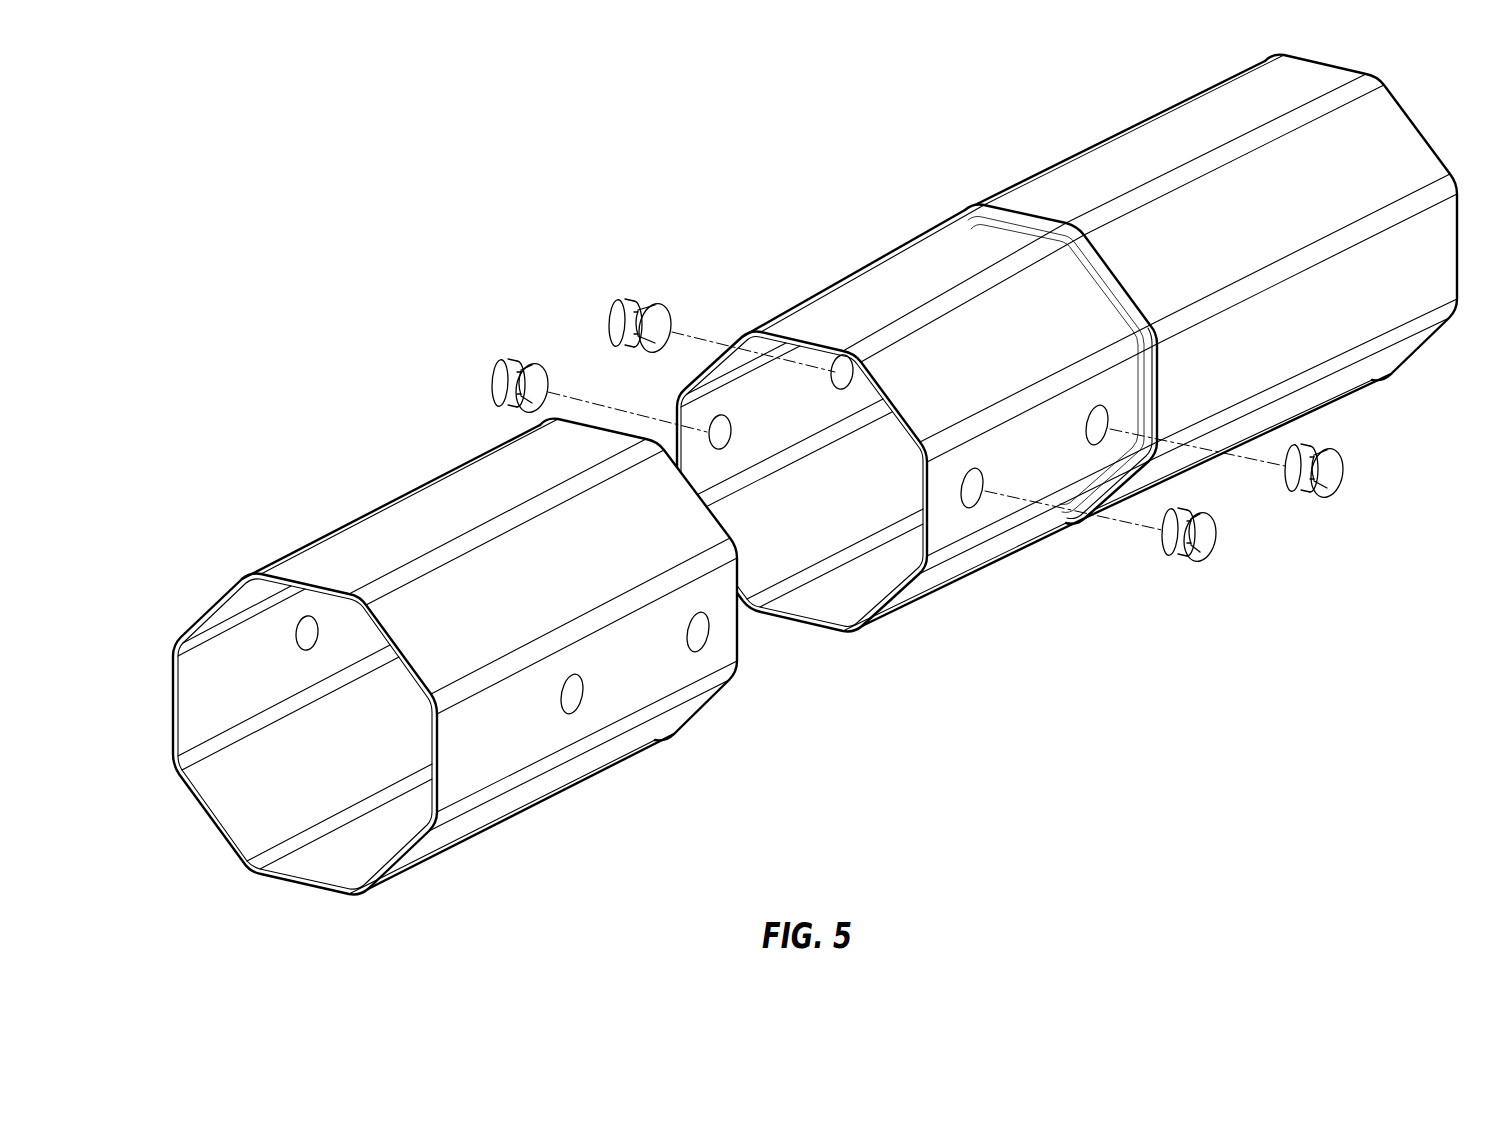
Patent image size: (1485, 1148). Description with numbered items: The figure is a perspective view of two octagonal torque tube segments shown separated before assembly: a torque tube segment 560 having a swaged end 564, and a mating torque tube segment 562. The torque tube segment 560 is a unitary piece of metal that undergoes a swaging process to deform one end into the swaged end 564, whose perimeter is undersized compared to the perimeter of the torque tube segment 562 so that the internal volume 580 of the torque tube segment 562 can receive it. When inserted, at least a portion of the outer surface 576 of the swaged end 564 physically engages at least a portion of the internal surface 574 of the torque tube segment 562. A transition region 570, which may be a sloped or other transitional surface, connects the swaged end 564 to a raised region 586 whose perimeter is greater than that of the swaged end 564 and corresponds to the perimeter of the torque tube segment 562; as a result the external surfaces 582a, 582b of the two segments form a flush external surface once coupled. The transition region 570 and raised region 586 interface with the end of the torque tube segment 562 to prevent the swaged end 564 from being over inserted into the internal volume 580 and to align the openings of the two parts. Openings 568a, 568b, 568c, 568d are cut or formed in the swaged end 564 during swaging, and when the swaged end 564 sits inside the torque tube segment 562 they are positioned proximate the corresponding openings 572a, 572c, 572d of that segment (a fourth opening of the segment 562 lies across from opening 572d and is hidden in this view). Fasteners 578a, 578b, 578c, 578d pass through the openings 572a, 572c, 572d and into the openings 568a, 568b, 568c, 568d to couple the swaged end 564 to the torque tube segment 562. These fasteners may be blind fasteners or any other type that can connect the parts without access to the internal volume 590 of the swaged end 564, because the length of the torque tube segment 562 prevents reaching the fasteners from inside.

The torque tube segment 560 is at (1072, 344).
The torque tube segment 562 is at (450, 663).
The swaged end 564 is at (916, 414).
The opening 568a is at (708, 430).
The opening 568b is at (838, 362).
The opening 568c is at (982, 495).
The opening 568d is at (1107, 432).
The transition region 570 is at (973, 205).
The opening 572a is at (297, 630).
The opening 572c is at (580, 706).
The opening 572d is at (708, 640).
The internal surface 574 is at (183, 700).
The outer surface 576 is at (928, 258).
The fastener 578a is at (495, 372).
The fastener 578b is at (612, 312).
The fastener 578c is at (1205, 548).
The fastener 578d is at (1336, 483).
The internal volume 580 is at (323, 862).
The external surface 582a is at (427, 500).
The external surface 582b is at (1073, 172).
The raised region 586 is at (1402, 136).
The internal volume 590 is at (817, 617).